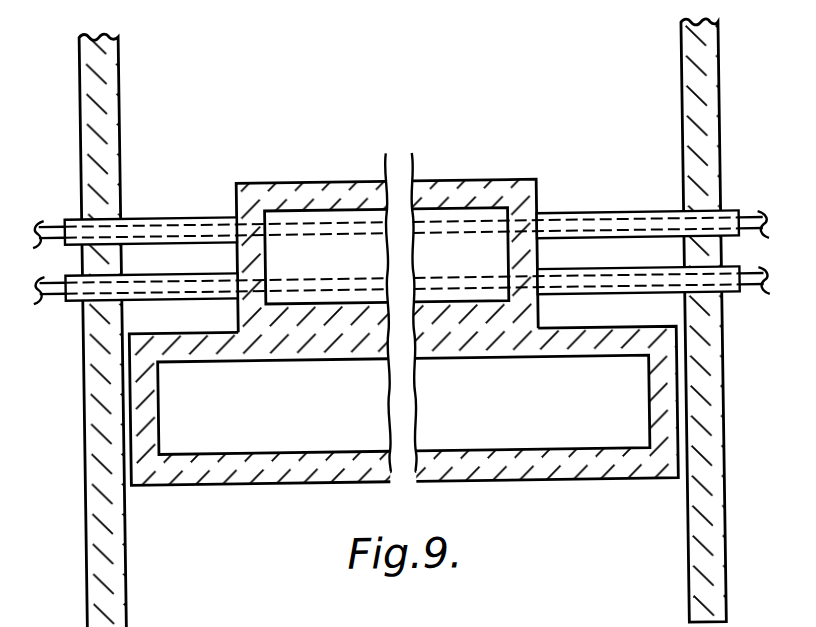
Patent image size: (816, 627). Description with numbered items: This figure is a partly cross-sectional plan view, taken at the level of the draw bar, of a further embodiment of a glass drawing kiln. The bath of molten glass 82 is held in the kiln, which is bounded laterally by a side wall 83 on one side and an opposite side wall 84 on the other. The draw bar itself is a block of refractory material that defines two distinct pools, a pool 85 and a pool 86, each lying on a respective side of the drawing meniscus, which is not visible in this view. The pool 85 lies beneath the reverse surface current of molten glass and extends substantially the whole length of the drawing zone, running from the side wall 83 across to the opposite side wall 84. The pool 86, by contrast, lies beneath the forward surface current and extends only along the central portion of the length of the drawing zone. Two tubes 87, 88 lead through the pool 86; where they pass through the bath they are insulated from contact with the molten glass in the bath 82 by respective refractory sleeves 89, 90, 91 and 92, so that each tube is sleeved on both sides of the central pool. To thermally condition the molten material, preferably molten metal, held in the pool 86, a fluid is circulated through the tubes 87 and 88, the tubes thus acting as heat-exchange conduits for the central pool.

The bath of molten glass 82 is at (536, 95).
The side wall 83 is at (702, 87).
The side wall 84 is at (105, 84).
The pool 85 is at (246, 483).
The pool 86 is at (304, 175).
The tube 87 is at (742, 290).
The tube 88 is at (753, 215).
The refractory sleeve 89 is at (627, 291).
The refractory sleeve 90 is at (595, 212).
The refractory sleeve 91 is at (80, 291).
The refractory sleeve 92 is at (77, 214).